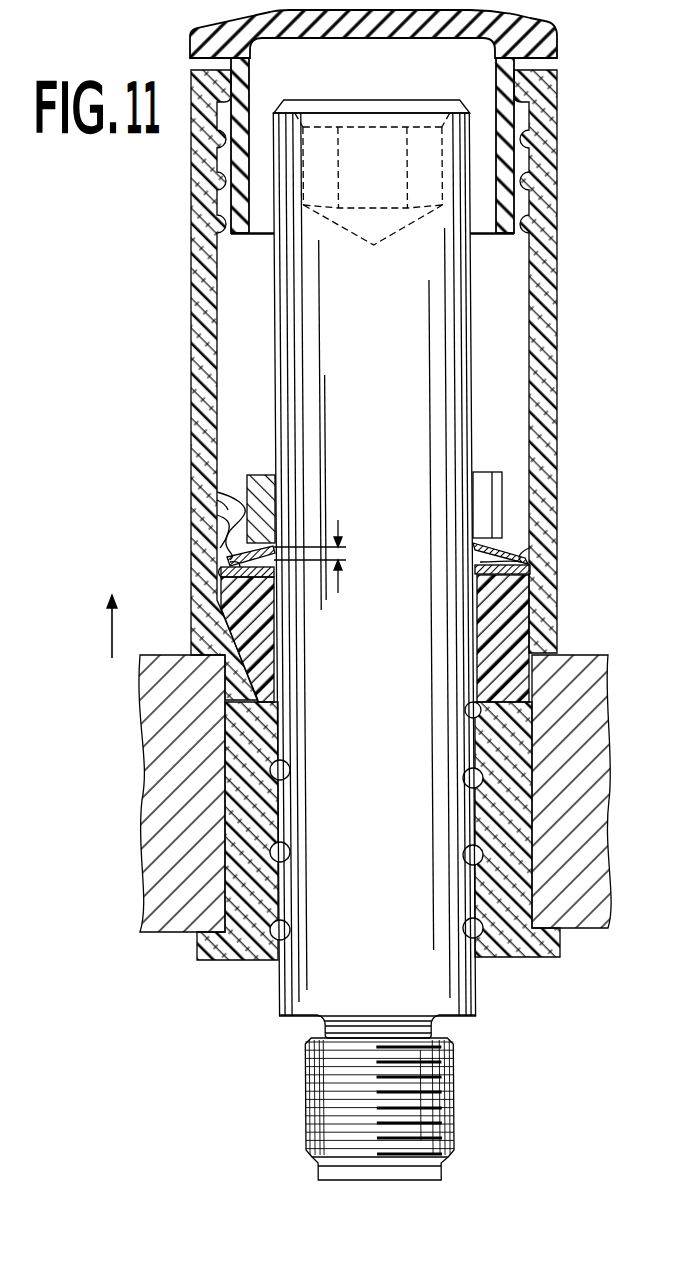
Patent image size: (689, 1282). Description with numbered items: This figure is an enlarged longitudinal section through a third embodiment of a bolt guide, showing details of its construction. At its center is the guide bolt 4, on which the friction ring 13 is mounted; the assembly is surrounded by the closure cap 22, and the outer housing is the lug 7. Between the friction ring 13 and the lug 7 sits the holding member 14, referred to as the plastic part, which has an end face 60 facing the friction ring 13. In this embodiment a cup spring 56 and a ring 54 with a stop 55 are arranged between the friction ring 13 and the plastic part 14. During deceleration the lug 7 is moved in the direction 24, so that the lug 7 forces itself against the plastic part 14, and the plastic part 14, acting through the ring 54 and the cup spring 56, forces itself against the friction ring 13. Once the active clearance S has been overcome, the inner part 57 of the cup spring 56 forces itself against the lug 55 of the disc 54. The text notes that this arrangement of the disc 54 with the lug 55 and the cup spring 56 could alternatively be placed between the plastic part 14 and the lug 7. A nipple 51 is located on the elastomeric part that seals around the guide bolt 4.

The guide bolt 4 is at (316, 982).
The lug 7 is at (152, 736).
The friction ring 13 is at (255, 478).
The holding member (plastic part) 14 is at (227, 626).
The closure cap 22 is at (528, 20).
The direction 24 is at (112, 640).
The nipple 51 is at (222, 517).
The ring (disc) 54 is at (236, 600).
The stop (lug of the disc) 55 is at (275, 571).
The cup spring 56 is at (220, 508).
The inner part of the cup spring 57 is at (276, 547).
The end face 60 is at (223, 570).
The active clearance S is at (343, 554).